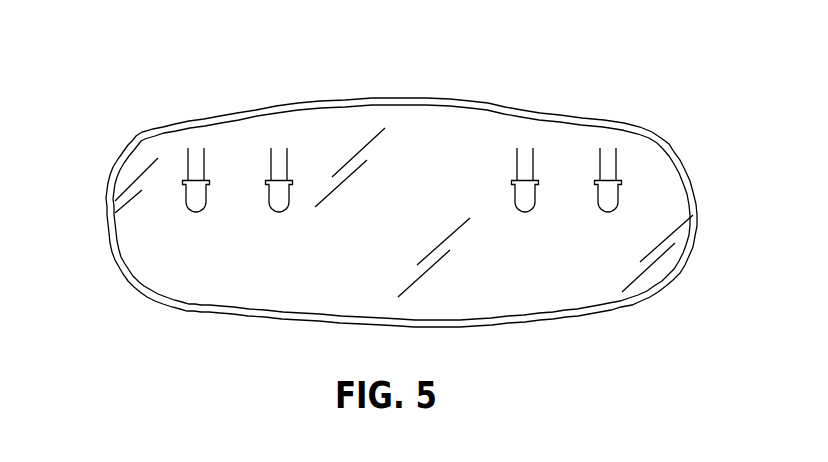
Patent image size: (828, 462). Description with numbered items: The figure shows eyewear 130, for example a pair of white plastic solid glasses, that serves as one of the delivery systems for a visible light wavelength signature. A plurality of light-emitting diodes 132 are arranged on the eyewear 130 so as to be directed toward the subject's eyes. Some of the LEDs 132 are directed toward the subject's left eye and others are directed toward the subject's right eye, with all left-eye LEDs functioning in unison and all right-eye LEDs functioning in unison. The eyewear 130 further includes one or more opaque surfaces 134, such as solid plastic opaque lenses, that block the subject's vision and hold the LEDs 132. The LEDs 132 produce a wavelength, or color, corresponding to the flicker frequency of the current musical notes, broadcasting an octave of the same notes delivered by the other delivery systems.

The eyewear 130 is at (616, 49).
The light-emitting diodes 132 is at (286, 197).
The opaque surface 134 is at (421, 132).